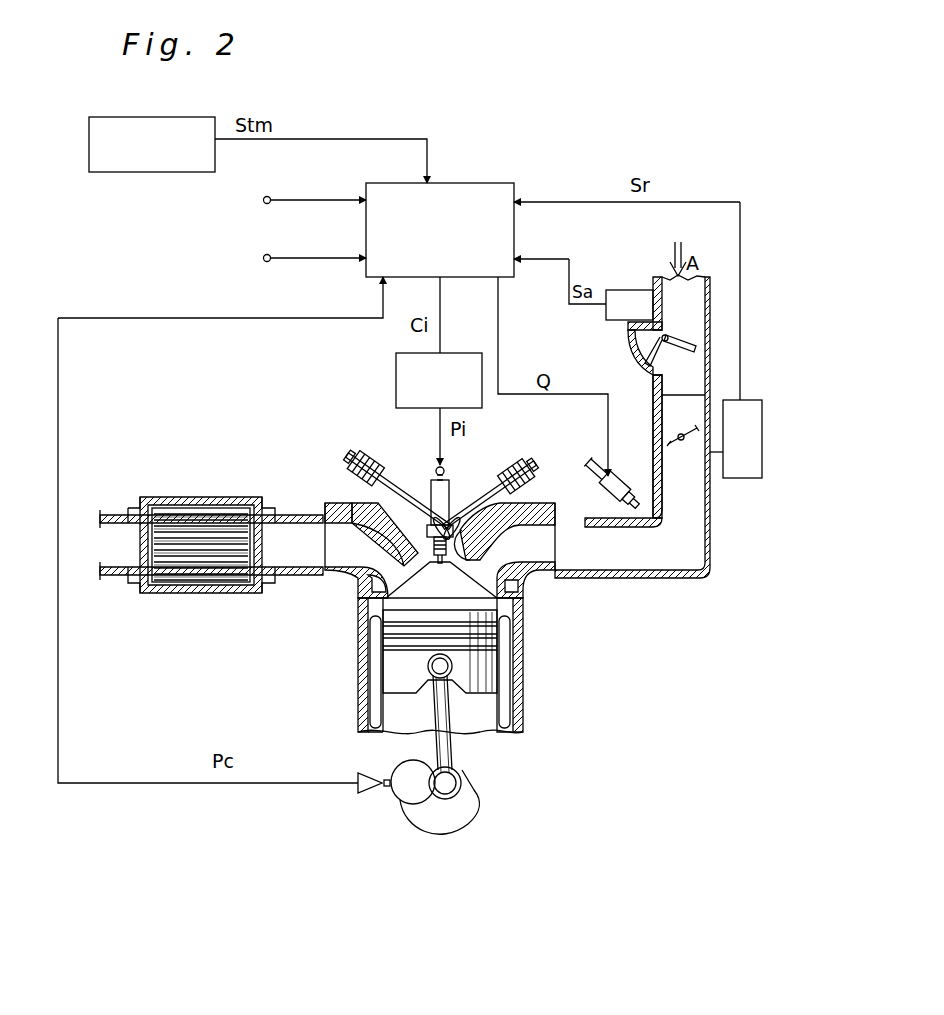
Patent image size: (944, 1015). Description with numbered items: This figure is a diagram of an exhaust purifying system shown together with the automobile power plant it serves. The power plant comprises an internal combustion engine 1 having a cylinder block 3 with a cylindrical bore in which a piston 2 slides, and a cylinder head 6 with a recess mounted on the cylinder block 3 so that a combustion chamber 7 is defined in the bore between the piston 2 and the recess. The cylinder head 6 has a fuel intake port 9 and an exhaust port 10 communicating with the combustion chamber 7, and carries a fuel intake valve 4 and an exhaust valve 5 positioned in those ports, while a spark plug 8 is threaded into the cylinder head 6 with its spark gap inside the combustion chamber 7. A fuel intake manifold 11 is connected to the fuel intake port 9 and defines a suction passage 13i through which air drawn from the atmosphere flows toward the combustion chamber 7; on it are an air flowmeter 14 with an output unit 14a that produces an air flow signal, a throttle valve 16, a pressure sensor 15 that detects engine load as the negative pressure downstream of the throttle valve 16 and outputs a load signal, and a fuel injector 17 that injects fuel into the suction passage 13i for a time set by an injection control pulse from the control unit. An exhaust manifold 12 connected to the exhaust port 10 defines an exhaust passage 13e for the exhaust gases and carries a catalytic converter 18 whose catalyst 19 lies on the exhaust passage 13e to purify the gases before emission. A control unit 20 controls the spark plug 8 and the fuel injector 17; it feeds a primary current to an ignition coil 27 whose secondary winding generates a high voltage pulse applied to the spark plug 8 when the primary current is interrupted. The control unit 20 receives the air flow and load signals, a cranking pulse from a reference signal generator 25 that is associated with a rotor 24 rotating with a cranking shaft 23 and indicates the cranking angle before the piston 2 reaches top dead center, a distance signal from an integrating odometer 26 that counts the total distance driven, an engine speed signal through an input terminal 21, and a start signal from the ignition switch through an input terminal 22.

The internal combustion engine 1 is at (432, 543).
The piston 2 is at (404, 680).
The cylinder block 3 is at (358, 660).
The fuel intake valve 4 is at (482, 560).
The exhaust valve 5 is at (396, 560).
The cylinder head 6 is at (470, 525).
The combustion chamber 7 is at (528, 605).
The spark plug 8 is at (447, 522).
The fuel intake port 9 is at (540, 525).
The exhaust port 10 is at (338, 548).
The fuel intake manifold 11 is at (628, 578).
The exhaust manifold 12 is at (211, 538).
The exhaust passage 13e is at (287, 548).
The suction passage 13i is at (682, 505).
The air flowmeter 14 is at (637, 356).
The output unit 14a is at (606, 319).
The pressure sensor 15 is at (748, 400).
The throttle valve 16 is at (670, 440).
The fuel injector 17 is at (600, 475).
The catalytic converter 18 is at (201, 558).
The catalyst 19 is at (195, 565).
The control unit 20 is at (465, 277).
The input terminal 21 is at (269, 196).
The input terminal 22 is at (269, 254).
The cranking shaft 23 is at (470, 805).
The rotor 24 is at (410, 800).
The reference signal generator 25 is at (368, 793).
The integrating odometer 26 is at (130, 172).
The ignition coil 27 is at (396, 377).